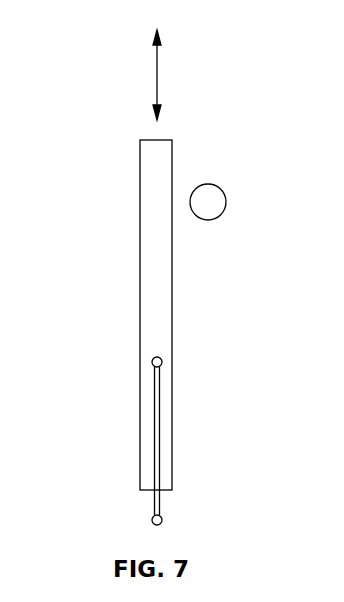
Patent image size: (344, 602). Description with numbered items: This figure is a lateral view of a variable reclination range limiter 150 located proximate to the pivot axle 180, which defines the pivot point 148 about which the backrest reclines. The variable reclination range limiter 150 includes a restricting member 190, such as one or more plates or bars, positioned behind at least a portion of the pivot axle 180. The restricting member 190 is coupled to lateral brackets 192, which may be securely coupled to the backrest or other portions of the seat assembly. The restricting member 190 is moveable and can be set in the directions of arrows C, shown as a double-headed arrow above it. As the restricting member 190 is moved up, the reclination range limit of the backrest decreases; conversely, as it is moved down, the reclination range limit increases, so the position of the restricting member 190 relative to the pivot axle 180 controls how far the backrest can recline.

The direction of movement arrows C is at (157, 77).
The restricting member 190 is at (140, 180).
The variable reclination range limiter 150 is at (102, 302).
The pivot axle 180 is at (226, 202).
The pivot point 148 is at (207, 207).
The lateral brackets 192 is at (152, 441).